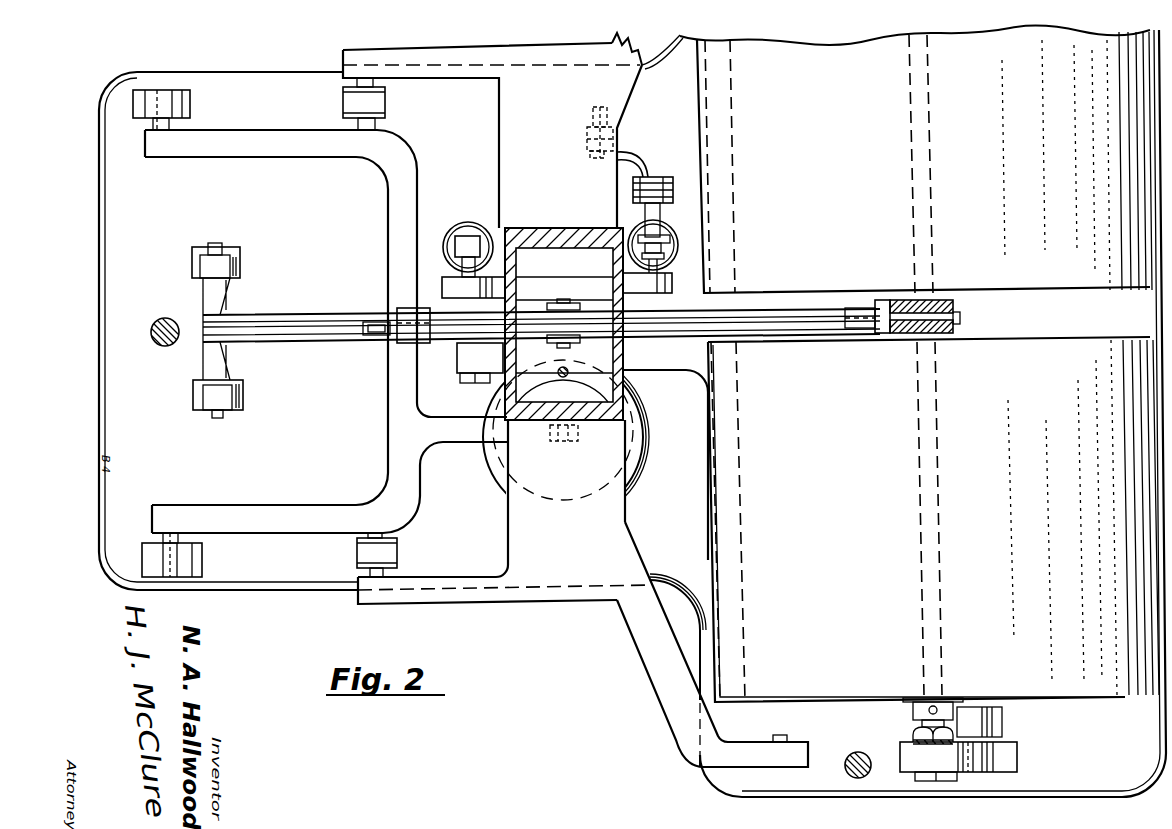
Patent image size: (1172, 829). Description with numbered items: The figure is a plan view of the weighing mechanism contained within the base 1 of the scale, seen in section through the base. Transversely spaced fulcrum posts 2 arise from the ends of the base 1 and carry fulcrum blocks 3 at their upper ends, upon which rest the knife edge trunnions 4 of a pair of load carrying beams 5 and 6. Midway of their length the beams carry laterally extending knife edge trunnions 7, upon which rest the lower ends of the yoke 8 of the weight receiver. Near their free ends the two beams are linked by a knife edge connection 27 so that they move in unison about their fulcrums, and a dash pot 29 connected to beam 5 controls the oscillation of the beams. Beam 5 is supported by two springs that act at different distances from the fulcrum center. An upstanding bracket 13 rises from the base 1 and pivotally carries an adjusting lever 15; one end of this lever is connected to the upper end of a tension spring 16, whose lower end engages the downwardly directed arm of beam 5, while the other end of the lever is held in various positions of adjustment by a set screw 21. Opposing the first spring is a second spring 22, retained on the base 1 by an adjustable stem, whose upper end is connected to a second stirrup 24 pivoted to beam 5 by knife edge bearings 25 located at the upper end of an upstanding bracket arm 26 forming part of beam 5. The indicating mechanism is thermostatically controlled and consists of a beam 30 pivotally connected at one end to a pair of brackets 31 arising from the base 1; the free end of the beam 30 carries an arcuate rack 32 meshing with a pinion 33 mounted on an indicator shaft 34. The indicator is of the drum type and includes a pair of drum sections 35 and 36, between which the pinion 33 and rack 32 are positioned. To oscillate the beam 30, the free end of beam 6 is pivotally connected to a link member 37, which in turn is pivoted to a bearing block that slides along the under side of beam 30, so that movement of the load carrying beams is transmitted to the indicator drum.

The base 1 is at (275, 580).
The fulcrum posts 2 is at (180, 102).
The fulcrum blocks 3 is at (152, 112).
The knife edge trunnions 4 is at (170, 125).
The beam 5 is at (410, 488).
The beam 6 is at (697, 368).
The knife edge trunnions 7 is at (385, 534).
The yoke 8 is at (597, 505).
The upstanding bracket 13 is at (670, 177).
The adjusting lever 15 is at (645, 166).
The tension spring 16 is at (677, 232).
The set screw 21 is at (606, 108).
The second spring 22 is at (445, 240).
The second stirrup 24 is at (466, 240).
The knife edge bearings 25 is at (470, 258).
The upstanding bracket arm 26 is at (443, 285).
The knife edge connection 27 is at (547, 340).
The dash pot 29 is at (545, 465).
The beam 30 is at (337, 328).
The brackets 31 is at (223, 262).
The arcuate rack 32 is at (882, 335).
The pinion 33 is at (953, 325).
The indicator shaft 34 is at (937, 367).
The drum section 35 is at (933, 519).
The drum section 36 is at (916, 159).
The link member 37 is at (457, 348).